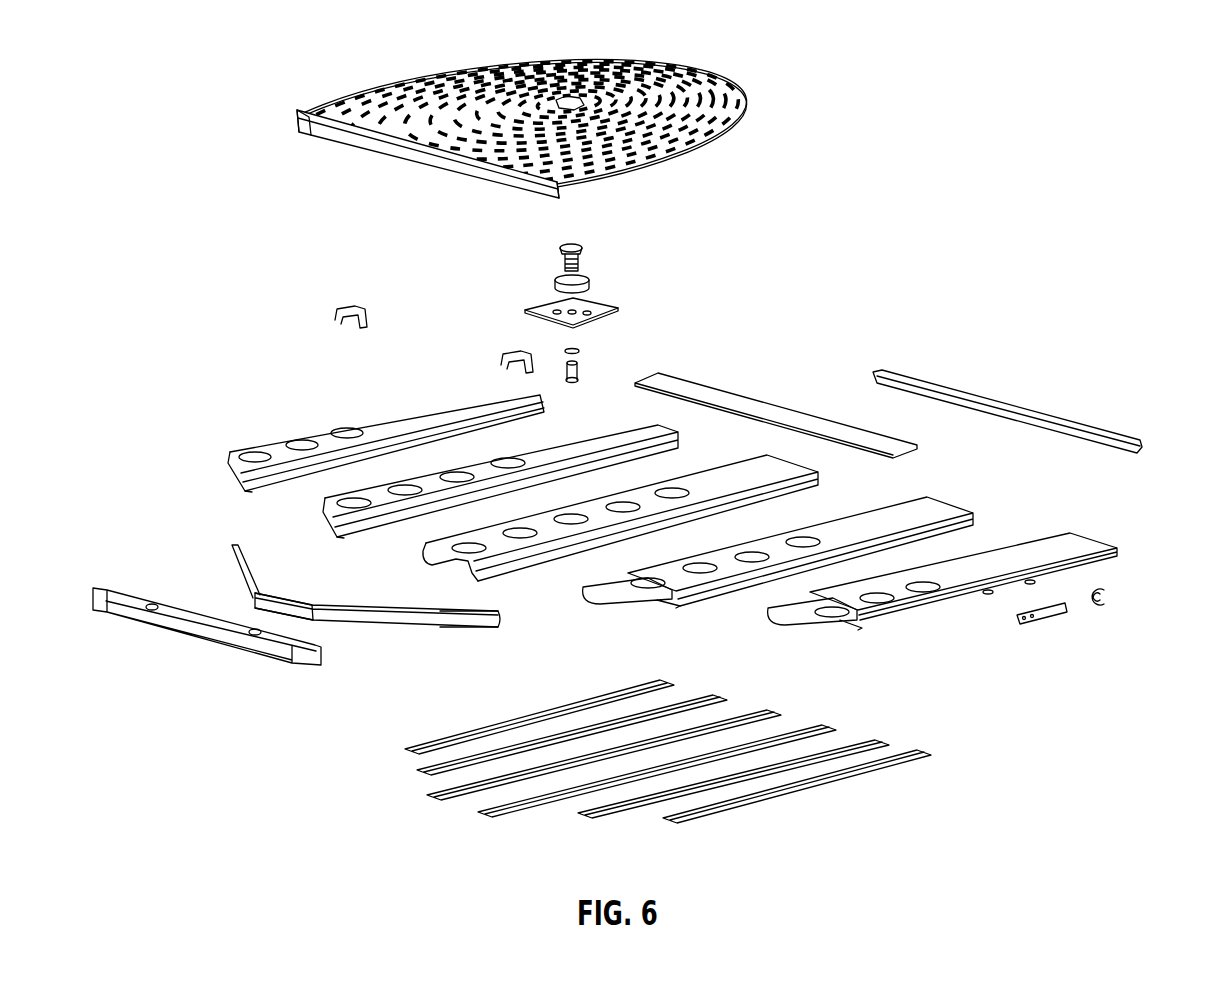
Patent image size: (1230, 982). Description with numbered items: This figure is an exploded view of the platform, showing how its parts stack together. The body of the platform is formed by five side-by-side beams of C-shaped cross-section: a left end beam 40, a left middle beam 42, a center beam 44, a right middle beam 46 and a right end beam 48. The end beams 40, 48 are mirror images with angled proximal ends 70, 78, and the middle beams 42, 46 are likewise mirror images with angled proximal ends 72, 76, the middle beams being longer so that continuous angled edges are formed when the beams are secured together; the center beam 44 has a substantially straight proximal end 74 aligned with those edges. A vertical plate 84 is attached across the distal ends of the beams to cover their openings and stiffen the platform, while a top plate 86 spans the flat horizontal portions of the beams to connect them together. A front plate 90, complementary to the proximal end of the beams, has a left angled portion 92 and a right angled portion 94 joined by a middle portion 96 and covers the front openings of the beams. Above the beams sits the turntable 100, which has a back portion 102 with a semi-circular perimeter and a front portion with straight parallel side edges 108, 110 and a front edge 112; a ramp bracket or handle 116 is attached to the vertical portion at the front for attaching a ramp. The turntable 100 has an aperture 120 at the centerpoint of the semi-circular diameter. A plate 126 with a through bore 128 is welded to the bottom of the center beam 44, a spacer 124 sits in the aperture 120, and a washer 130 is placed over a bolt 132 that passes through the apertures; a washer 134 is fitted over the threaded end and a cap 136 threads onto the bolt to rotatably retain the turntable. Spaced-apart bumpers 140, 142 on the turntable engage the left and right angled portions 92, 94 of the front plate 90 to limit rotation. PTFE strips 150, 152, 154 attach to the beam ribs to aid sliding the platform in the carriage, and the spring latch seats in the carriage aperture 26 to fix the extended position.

The aperture 26 is at (1047, 624).
The left end beam 40 is at (487, 402).
The left middle beam 42 is at (632, 437).
The center beam 44 is at (775, 468).
The right middle beam 46 is at (928, 513).
The right end beam 48 is at (1085, 550).
The angled proximal end 70 is at (233, 470).
The angled proximal end 72 is at (330, 518).
The straight proximal end 74 is at (462, 562).
The angled proximal end 76 is at (648, 592).
The angled proximal end 78 is at (833, 620).
The vertical plate 84 is at (972, 402).
The top plate 86 is at (732, 402).
The front plate 90 is at (398, 625).
The left angled portion 92 is at (232, 558).
The right angled portion 94 is at (465, 620).
The middle portion 96 is at (283, 607).
The turntable 100 is at (513, 55).
The back portion 102 is at (653, 72).
The side edge 108 is at (398, 80).
The side edge 110 is at (650, 160).
The front edge 112 is at (298, 110).
The ramp bracket or handle 116 is at (185, 625).
The aperture 120 is at (570, 100).
The spacer 124 is at (573, 277).
The plate 126 is at (560, 298).
The through bore 128 is at (600, 308).
The washer 130 is at (570, 350).
The bolt 132 is at (577, 372).
The washer 134 is at (562, 268).
The cap 136 is at (570, 243).
The bumper 140 is at (333, 312).
The bumper 142 is at (498, 355).
The PTFE strip 150 is at (407, 755).
The PTFE strip 152 is at (417, 775).
The PTFE strip 154 is at (488, 815).